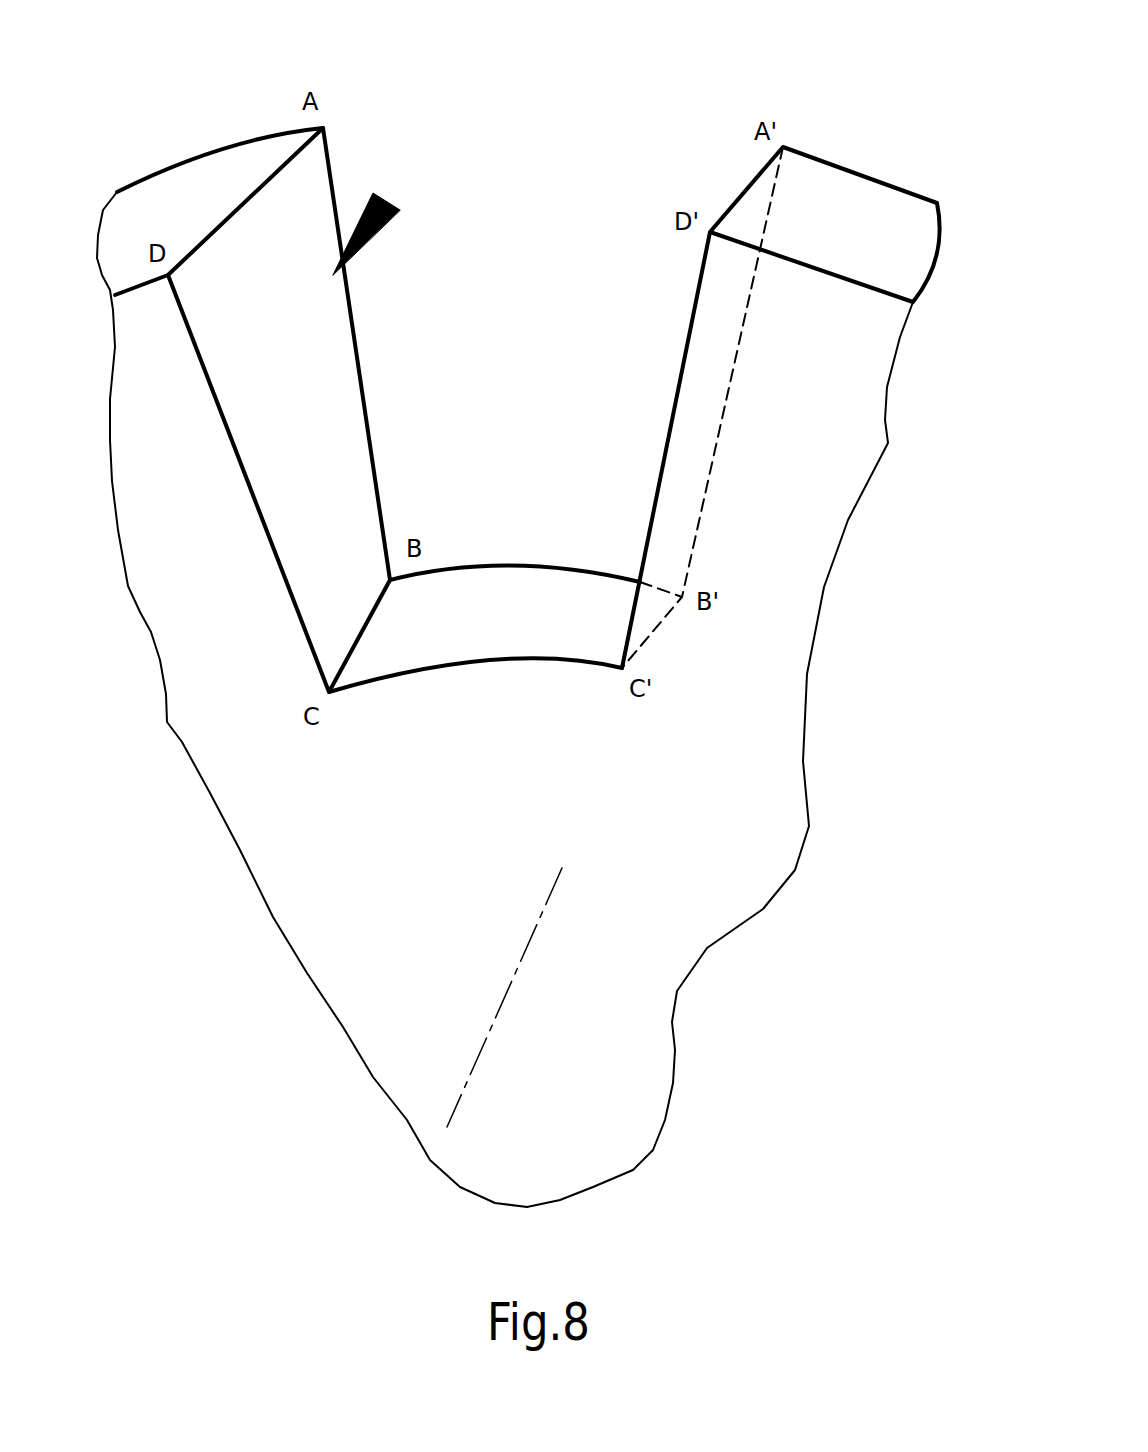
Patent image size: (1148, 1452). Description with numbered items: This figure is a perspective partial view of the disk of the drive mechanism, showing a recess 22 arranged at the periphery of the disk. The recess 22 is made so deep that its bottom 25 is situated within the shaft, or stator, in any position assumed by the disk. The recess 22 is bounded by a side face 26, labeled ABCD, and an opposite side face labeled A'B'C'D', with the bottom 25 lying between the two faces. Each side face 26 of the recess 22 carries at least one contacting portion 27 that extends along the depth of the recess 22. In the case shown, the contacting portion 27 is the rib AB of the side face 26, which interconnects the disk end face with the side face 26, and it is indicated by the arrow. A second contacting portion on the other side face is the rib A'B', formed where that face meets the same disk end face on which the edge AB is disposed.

The recess 22 is at (508, 247).
The bottom 25 is at (533, 612).
The side face 26 is at (258, 250).
The contacting portion 27 is at (387, 200).